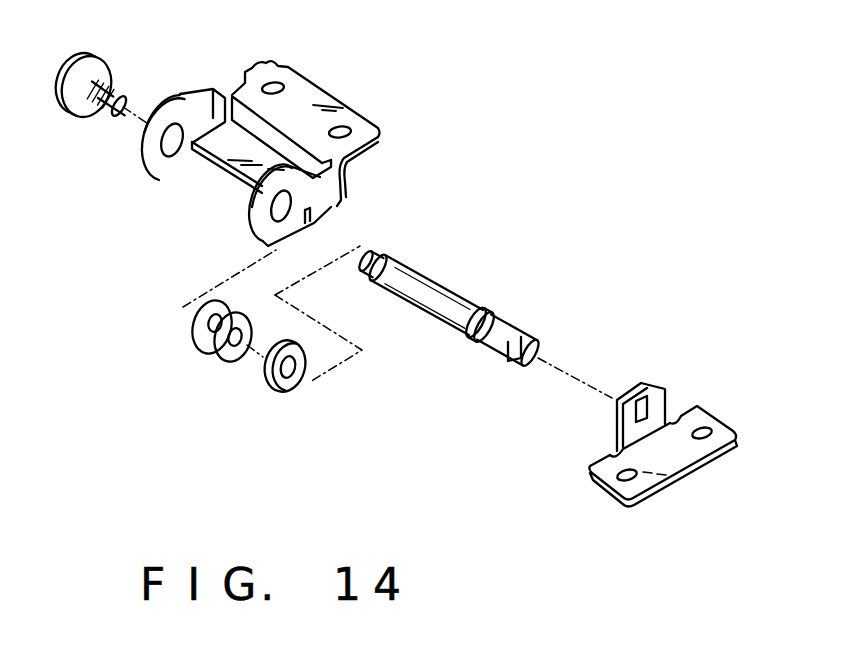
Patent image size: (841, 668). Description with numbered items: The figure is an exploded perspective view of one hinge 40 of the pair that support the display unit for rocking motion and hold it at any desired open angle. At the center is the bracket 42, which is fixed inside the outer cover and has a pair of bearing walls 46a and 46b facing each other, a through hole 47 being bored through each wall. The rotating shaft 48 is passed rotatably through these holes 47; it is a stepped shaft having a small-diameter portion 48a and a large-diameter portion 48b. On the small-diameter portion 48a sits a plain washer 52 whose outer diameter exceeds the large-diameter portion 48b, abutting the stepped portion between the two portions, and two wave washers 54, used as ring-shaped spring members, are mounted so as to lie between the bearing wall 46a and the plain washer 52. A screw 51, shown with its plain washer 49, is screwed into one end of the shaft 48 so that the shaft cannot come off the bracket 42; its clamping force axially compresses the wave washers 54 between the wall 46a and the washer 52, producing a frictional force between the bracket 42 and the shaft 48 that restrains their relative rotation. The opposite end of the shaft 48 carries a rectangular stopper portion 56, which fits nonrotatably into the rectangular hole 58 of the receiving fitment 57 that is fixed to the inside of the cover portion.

The hinge 40 is at (372, 99).
The bracket 42 is at (308, 106).
The bearing wall 46a is at (193, 105).
The bearing wall 46b is at (337, 202).
The through hole 47 is at (170, 156).
The rotating shaft 48 is at (438, 325).
The small-diameter portion 48a is at (366, 283).
The large-diameter portion 48b is at (450, 300).
The plain washer 49 is at (80, 104).
The screw 51 is at (119, 88).
The plain washer 52 is at (283, 388).
The wave washers 54 is at (222, 352).
The stopper portion 56 is at (515, 364).
The receiving fitment 57 is at (686, 458).
The rectangular hole 58 is at (650, 403).